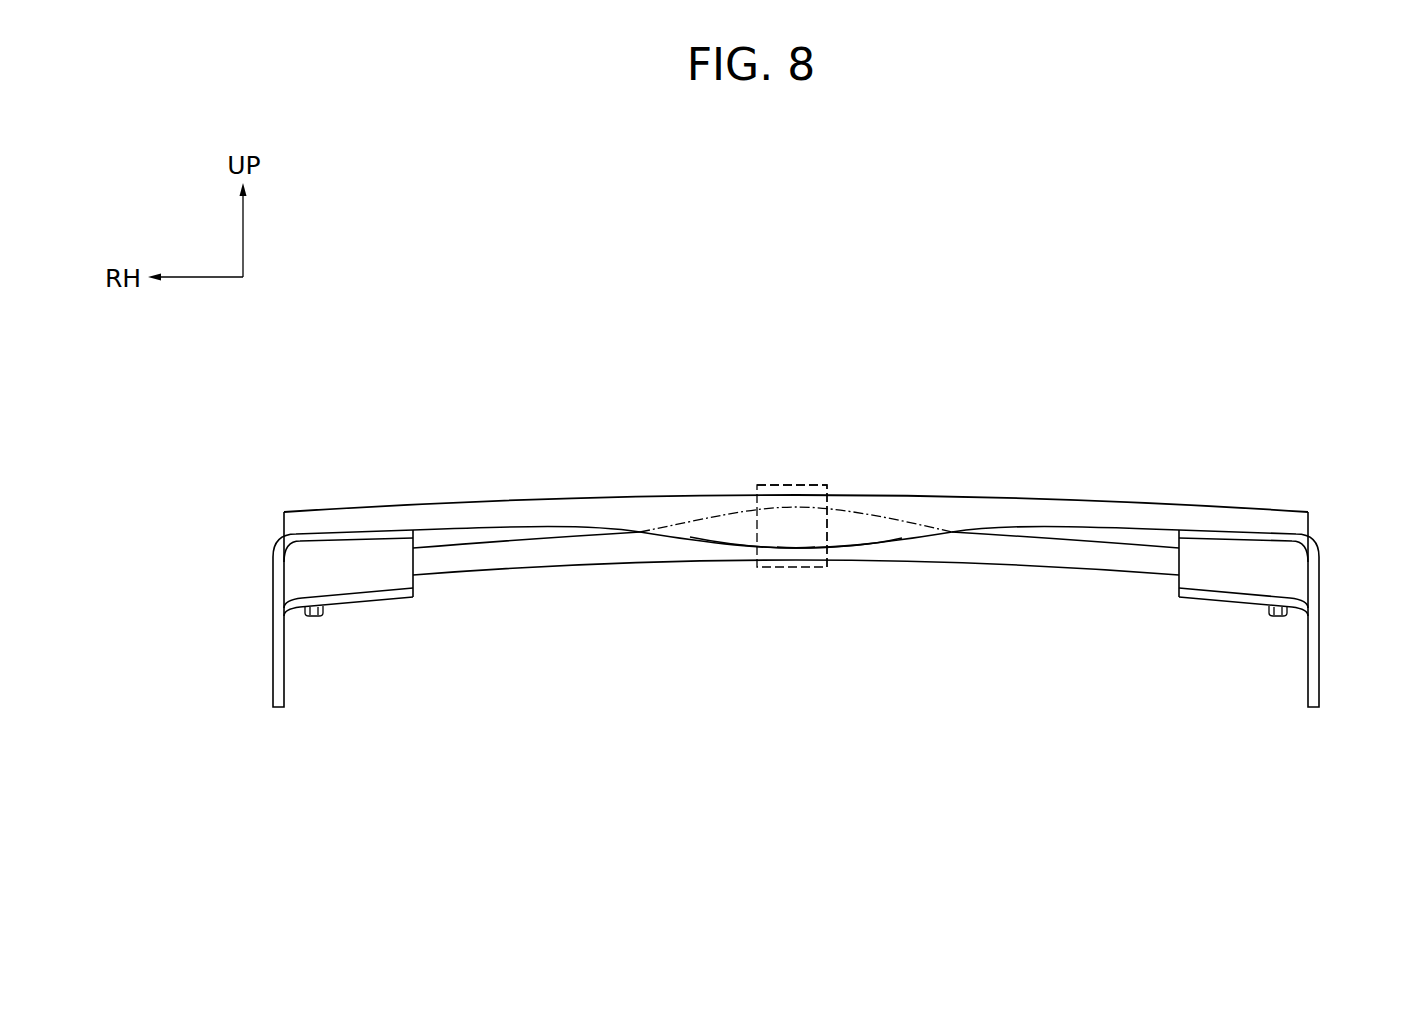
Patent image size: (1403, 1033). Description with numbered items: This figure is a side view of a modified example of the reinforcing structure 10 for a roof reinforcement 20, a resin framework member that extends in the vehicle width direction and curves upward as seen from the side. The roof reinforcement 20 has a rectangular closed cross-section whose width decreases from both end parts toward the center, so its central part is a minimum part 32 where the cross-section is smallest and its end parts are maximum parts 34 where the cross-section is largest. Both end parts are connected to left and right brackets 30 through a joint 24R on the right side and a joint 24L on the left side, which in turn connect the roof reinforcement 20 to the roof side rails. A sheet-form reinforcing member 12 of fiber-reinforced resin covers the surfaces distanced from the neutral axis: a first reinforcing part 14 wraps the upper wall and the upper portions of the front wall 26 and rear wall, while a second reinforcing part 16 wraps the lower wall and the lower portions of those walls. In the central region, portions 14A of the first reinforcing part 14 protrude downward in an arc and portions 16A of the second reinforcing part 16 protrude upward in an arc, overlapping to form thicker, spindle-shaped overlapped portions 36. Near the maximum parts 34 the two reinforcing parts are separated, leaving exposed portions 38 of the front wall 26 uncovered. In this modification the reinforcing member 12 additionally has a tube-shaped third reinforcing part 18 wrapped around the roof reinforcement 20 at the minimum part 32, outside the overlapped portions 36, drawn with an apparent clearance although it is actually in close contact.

The reinforcing structure 10 is at (796, 541).
The reinforcing member 12 is at (796, 477).
The first reinforcing part 14 is at (562, 503).
The portions of the first reinforcing part 14A is at (723, 532).
The second reinforcing part 16 is at (995, 562).
The portions of the second reinforcing part 16A is at (889, 532).
The third reinforcing part 18 is at (827, 484).
The roof reinforcement 20 is at (796, 528).
The joint 24R is at (312, 617).
The joint 24L is at (1277, 617).
The front wall 26 is at (493, 540).
The bracket 30 is at (273, 676).
The minimum part 32 is at (790, 480).
The maximum part 34 is at (280, 505).
The overlapped portion 36 is at (805, 540).
The exposed portion 38 is at (1158, 537).